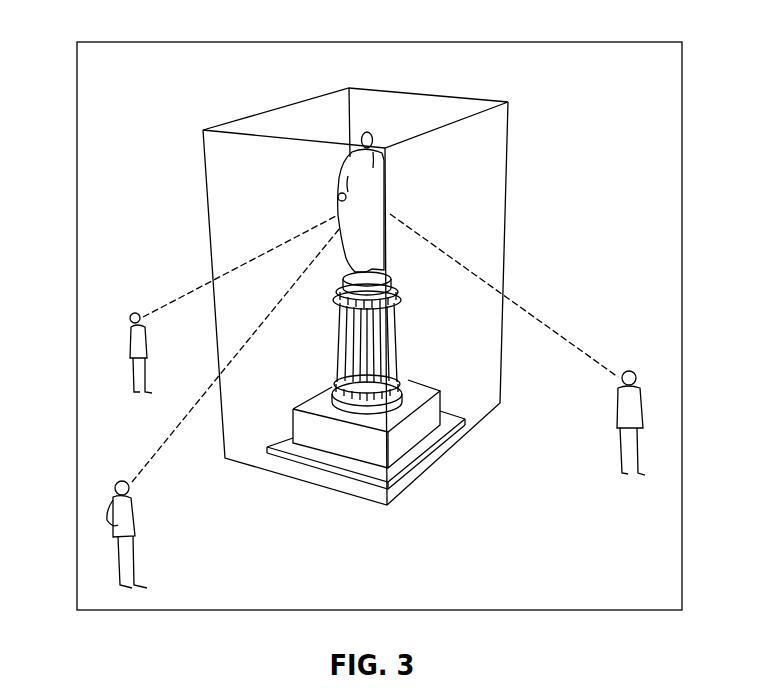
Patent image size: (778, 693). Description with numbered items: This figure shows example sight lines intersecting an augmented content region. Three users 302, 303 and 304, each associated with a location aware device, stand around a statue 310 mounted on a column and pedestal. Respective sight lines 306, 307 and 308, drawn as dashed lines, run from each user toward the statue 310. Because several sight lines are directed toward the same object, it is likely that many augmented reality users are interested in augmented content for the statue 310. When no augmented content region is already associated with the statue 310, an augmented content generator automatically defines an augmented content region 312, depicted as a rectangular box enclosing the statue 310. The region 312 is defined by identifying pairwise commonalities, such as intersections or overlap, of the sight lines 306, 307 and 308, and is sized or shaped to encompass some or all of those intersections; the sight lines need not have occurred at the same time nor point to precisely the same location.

The user 302 is at (125, 328).
The user 303 is at (108, 518).
The user 304 is at (643, 392).
The sight line 306 is at (195, 292).
The sight line 307 is at (153, 462).
The sight line 308 is at (572, 343).
The statue 310 is at (378, 150).
The augmented content region 312 is at (484, 193).